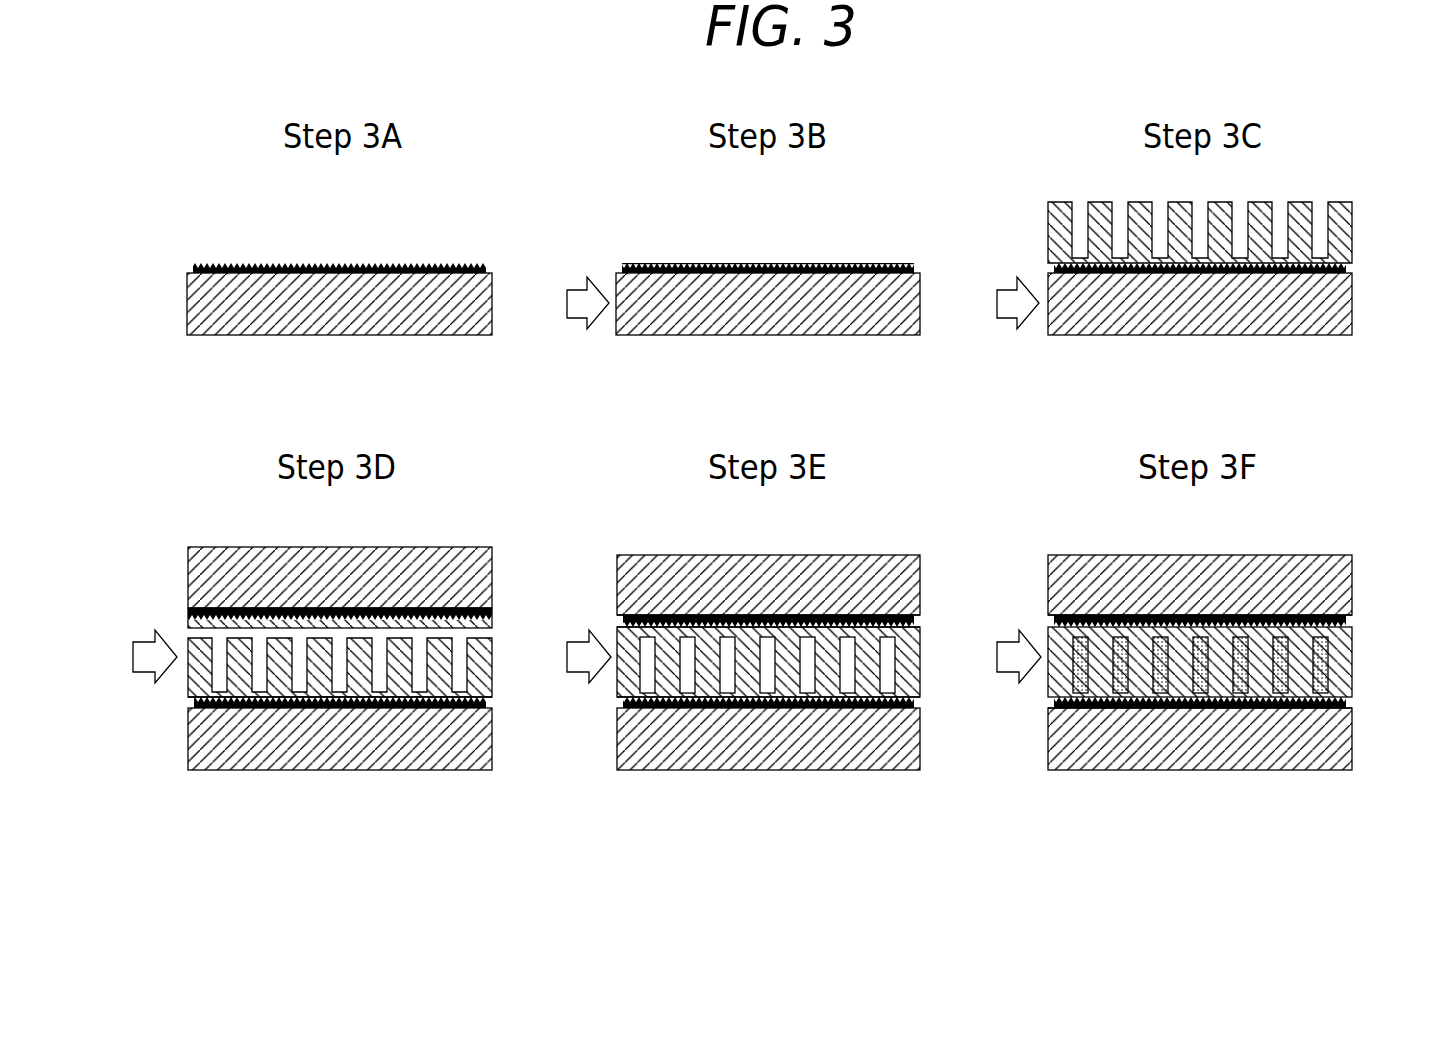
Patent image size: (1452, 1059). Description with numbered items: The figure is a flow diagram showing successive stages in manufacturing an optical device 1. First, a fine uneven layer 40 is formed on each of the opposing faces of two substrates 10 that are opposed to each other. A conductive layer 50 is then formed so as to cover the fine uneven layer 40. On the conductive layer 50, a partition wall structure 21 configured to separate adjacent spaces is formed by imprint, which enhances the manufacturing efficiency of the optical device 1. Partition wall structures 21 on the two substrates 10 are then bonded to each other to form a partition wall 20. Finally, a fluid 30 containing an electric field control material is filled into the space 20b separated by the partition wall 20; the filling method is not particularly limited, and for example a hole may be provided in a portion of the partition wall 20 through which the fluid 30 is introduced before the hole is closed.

The optical device 1 is at (1351, 511).
The substrate 10 is at (483, 320).
The partition wall 20 is at (910, 664).
The space 20b is at (845, 637).
The partition wall structure 21 is at (1340, 236).
The fluid 30 is at (1325, 676).
The fine uneven layer 40 is at (488, 268).
The conductive layer 50 is at (914, 266).